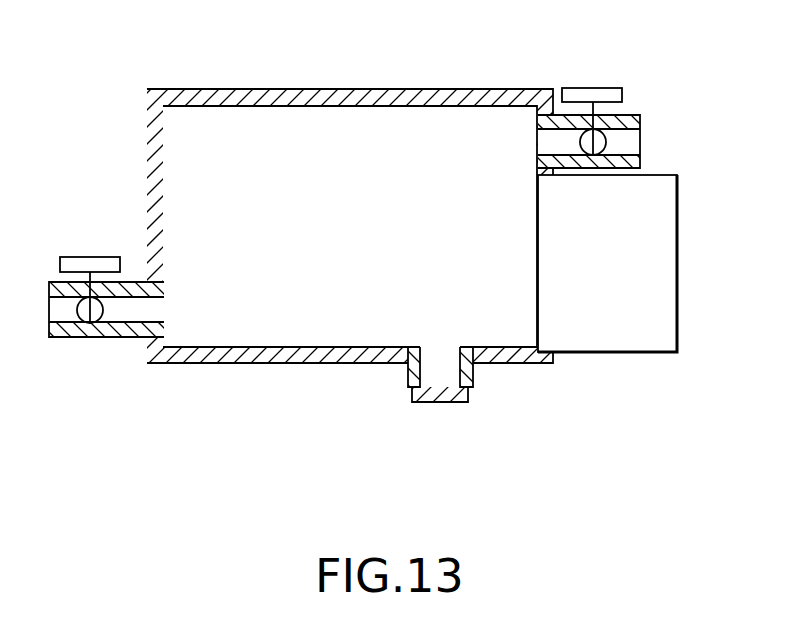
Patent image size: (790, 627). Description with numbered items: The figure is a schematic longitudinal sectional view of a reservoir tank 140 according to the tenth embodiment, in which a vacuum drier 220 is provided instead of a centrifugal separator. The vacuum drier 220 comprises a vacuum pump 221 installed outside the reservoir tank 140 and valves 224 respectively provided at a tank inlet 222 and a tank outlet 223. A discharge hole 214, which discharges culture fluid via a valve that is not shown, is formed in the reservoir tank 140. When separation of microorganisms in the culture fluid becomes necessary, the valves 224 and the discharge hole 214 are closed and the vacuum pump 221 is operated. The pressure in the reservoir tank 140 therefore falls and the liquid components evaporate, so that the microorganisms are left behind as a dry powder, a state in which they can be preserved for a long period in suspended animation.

The reservoir tank 140 is at (302, 362).
The discharge hole 214 is at (448, 370).
The vacuum drier 220 is at (395, 250).
The vacuum pump 221 is at (630, 340).
The tank inlet 222 is at (684, 172).
The tank outlet 223 is at (62, 312).
The valve 224 is at (66, 292).